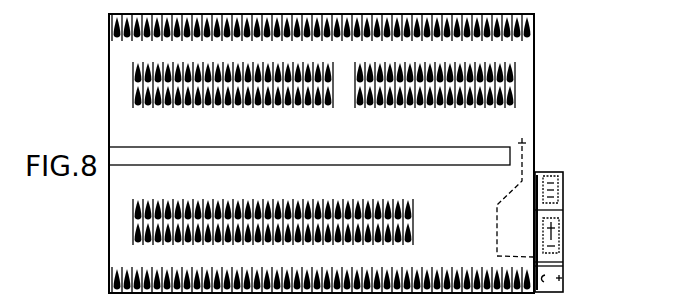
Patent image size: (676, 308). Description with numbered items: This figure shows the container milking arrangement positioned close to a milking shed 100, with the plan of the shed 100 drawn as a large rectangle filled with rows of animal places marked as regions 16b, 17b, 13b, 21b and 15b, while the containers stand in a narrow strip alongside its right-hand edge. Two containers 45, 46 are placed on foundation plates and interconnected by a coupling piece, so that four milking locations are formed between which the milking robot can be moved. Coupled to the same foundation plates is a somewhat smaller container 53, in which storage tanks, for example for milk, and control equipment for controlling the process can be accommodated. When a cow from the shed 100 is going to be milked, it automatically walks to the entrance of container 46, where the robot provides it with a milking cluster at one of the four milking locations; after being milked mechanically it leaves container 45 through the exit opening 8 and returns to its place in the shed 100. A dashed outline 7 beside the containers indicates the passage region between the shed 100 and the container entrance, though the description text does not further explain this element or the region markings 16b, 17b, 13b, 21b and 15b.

The shed 100 is at (461, 211).
The exit opening 8 is at (538, 178).
The container 45 is at (563, 192).
The container 46 is at (563, 230).
The container 53 is at (563, 268).
The cursor outline 7 is at (531, 249).
The top indicator row 16b is at (321, 31).
The upper left indicator block 17b is at (233, 85).
The upper right indicator block 13b is at (435, 84).
The lower indicator block 21b is at (273, 222).
The bottom indicator row 15b is at (321, 277).